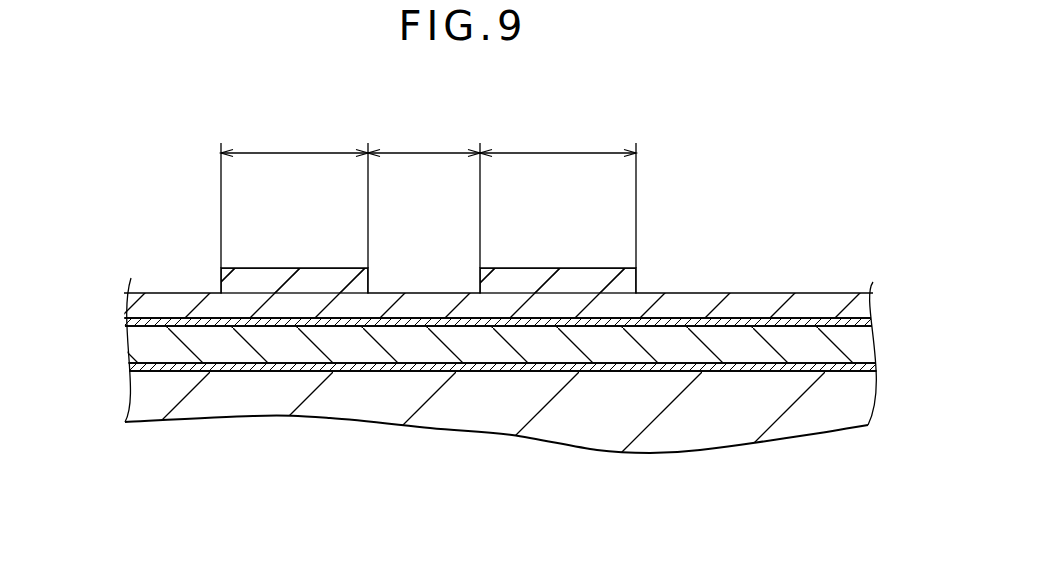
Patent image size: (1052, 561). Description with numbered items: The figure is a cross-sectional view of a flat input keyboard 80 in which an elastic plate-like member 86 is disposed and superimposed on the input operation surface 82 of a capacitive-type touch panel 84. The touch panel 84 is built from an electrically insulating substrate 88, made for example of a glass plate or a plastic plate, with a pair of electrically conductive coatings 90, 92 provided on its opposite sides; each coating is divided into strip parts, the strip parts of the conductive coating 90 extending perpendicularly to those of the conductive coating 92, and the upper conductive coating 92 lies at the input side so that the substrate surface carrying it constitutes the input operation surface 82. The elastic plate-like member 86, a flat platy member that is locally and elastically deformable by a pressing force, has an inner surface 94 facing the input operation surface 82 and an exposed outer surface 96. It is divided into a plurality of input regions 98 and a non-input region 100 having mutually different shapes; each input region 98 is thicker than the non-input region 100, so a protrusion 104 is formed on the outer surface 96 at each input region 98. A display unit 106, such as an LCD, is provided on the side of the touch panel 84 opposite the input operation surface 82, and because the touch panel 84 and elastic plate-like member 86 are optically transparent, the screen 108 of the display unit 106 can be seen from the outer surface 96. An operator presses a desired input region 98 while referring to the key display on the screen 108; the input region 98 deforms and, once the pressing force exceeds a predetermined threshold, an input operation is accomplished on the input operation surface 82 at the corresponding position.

The flat input keyboard 80 is at (770, 188).
The input operation surface 82 is at (818, 320).
The capacitive-type touch panel 84 is at (610, 376).
The elastic plate-like member 86 is at (776, 290).
The electrically insulating substrate 88 is at (482, 352).
The electrically conductive coating 90 is at (413, 372).
The electrically conductive coating 92 is at (512, 323).
The inner surface 94 is at (153, 333).
The outer surface 96 is at (175, 292).
The input region 98 is at (428, 192).
The non-input region 100 is at (424, 137).
The protrusion 104 is at (267, 267).
The display unit 106 is at (250, 397).
The screen 108 is at (171, 363).